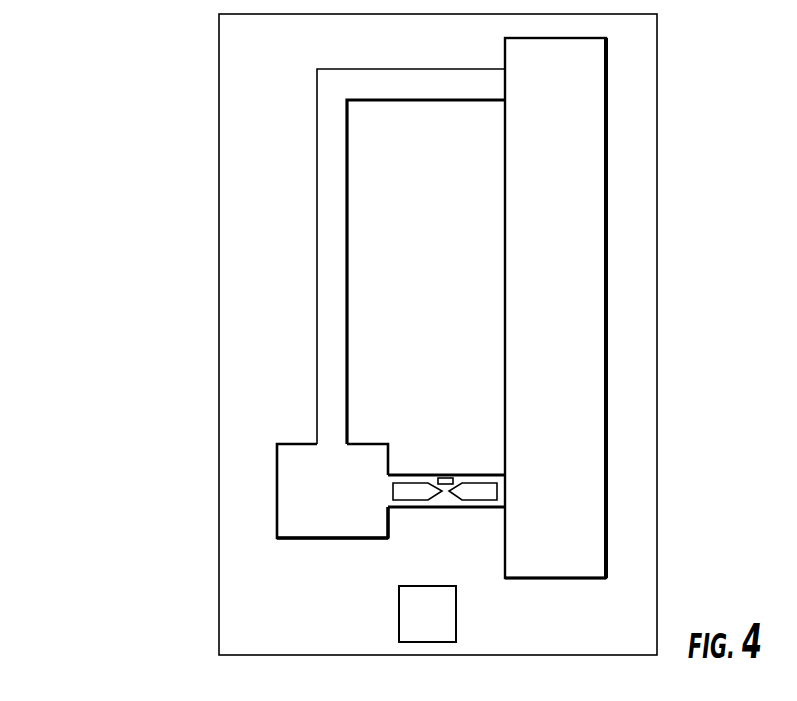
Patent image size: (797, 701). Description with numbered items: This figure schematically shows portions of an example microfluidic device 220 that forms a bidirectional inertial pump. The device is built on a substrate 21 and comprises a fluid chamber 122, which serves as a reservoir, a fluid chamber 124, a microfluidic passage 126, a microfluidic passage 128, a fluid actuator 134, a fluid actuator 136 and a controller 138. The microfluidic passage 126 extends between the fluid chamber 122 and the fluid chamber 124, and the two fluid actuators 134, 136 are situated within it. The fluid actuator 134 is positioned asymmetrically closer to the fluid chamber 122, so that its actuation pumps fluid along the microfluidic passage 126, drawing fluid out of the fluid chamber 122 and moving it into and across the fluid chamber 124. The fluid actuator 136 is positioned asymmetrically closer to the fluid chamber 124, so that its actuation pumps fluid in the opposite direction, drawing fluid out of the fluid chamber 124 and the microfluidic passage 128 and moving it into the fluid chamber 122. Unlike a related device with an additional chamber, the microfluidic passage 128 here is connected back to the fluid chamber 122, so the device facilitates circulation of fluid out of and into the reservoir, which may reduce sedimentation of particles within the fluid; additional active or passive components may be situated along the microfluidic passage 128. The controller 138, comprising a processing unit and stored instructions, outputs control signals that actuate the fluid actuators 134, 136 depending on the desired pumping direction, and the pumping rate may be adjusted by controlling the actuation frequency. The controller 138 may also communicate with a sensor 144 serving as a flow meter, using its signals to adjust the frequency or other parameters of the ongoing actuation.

The microfluidic device 220 is at (78, 189).
The substrate 21 is at (219, 572).
The fluid chamber 122 is at (608, 535).
The fluid chamber 124 is at (285, 452).
The microfluidic passage 126 is at (485, 475).
The microfluidic passage 128 is at (316, 270).
The fluid actuator 134 is at (470, 496).
The fluid actuator 136 is at (417, 496).
The controller 138 is at (457, 605).
The sensor 144 is at (447, 478).